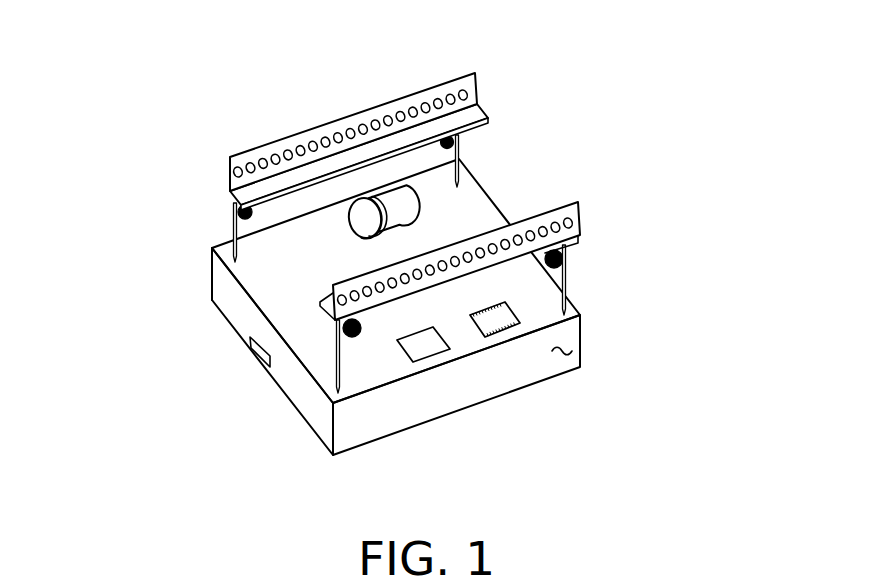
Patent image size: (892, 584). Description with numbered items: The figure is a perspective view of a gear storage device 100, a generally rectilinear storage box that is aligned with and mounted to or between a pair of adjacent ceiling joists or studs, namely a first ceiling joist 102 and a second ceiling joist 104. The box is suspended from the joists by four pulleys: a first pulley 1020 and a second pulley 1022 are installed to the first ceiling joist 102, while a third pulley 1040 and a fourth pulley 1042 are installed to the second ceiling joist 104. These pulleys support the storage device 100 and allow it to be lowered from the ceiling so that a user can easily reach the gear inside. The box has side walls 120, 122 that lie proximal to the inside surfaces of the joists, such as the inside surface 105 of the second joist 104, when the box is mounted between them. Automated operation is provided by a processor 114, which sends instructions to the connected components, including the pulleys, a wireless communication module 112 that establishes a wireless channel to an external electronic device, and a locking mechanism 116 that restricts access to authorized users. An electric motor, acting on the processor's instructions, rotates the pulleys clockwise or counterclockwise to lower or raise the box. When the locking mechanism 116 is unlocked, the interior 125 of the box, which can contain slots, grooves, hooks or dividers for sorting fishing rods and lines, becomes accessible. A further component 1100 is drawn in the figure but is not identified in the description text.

The gear storage device 100 is at (214, 323).
The first ceiling joist 102 is at (585, 205).
The second ceiling joist 104 is at (396, 106).
The inside surface of the joist 105 is at (261, 156).
The wireless communication module 112 is at (422, 345).
The processor 114 is at (495, 323).
The locking mechanism 116 is at (262, 357).
The side wall 120 is at (572, 352).
The side wall 122 is at (213, 262).
The interior of the box 125 is at (444, 192).
The first pulley 1020 is at (567, 256).
The second pulley 1022 is at (346, 333).
The third pulley 1040 is at (463, 141).
The fourth pulley 1042 is at (233, 211).
The cylindrical component 1100 is at (387, 207).